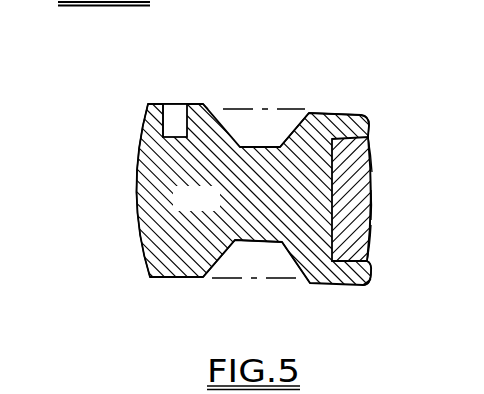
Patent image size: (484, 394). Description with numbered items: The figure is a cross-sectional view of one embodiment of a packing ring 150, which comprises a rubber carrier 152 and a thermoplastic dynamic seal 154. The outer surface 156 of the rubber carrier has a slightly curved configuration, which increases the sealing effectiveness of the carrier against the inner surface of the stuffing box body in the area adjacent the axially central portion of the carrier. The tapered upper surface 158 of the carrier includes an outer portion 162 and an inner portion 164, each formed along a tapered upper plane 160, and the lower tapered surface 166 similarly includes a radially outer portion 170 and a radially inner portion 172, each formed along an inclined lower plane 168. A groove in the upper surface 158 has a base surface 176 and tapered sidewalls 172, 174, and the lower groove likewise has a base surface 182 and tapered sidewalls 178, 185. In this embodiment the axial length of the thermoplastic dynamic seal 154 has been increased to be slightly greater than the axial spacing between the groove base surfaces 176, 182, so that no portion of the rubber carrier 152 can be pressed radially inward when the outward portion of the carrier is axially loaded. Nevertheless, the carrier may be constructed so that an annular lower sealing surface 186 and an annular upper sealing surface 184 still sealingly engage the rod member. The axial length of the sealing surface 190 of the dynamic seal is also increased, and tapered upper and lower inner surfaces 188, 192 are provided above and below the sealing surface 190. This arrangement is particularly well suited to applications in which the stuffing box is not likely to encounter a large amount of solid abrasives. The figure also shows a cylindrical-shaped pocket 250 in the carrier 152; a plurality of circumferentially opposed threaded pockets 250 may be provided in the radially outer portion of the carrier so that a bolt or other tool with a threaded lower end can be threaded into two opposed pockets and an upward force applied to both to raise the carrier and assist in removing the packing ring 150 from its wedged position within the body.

The packing ring 150 is at (363, 93).
The rubber carrier 152 is at (218, 210).
The thermoplastic dynamic seal 154 is at (358, 197).
The outer surface 156 is at (136, 190).
The tapered upper surface 158 is at (176, 103).
The tapered upper plane 160 is at (251, 108).
The outer portion 162 is at (151, 103).
The inner portion 164 is at (304, 118).
The lower tapered surface 166 is at (198, 279).
The inclined lower plane 168 is at (243, 278).
The radially outer portion 170 is at (160, 279).
The radially inner portion 172 is at (198, 103).
The tapered sidewall 174 is at (296, 116).
The base surface 176 is at (272, 147).
The tapered sidewall 178 is at (223, 255).
The base surface 182 is at (255, 245).
The annular upper sealing surface 184 is at (370, 124).
The tapered sidewall 185 is at (297, 262).
The annular lower sealing surface 186 is at (367, 275).
The tapered upper inner surface 188 is at (370, 168).
The sealing surface 190 is at (372, 203).
The tapered lower inner surface 192 is at (370, 242).
The cylindrical-shaped pocket 250 is at (175, 118).